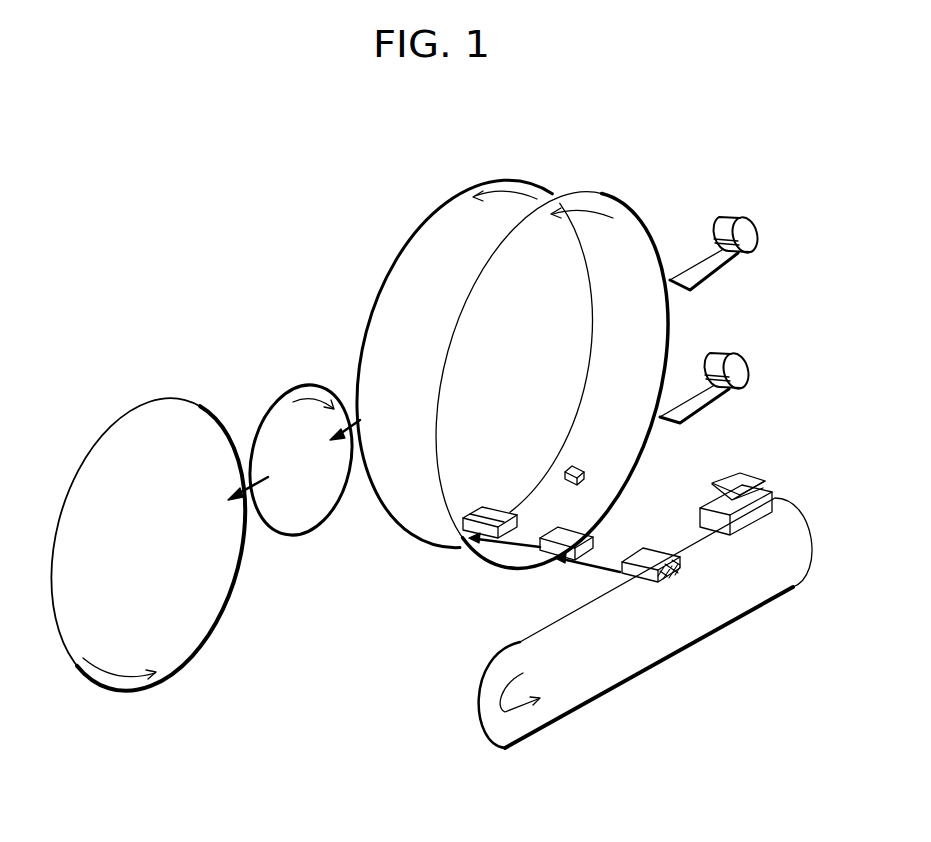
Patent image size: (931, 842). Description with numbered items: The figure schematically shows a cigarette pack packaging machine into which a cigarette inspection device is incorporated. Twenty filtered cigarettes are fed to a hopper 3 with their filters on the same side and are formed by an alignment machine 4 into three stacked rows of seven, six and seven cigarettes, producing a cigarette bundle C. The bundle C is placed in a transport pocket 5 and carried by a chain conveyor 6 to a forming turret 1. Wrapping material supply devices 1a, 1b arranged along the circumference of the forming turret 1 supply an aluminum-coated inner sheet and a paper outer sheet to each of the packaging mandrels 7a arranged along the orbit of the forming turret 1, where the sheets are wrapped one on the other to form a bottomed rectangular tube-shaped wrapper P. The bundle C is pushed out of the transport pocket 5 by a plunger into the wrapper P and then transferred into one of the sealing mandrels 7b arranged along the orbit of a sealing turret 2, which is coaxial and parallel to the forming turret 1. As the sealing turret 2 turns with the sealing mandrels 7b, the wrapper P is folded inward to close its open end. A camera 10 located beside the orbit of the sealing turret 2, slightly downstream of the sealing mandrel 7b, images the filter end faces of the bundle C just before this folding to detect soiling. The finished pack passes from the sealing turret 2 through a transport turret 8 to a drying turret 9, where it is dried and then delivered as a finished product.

The forming turret 1 is at (600, 192).
The wrapping material supply device 1a is at (730, 353).
The wrapping material supply device 1b is at (740, 217).
The sealing turret 2 is at (524, 178).
The hopper 3 is at (735, 476).
The alignment machine 4 is at (777, 496).
The transport pocket 5 is at (652, 553).
The chain conveyor 6 is at (678, 648).
The packaging mandrel 7a is at (558, 528).
The sealing mandrel 7b is at (490, 512).
The transport turret 8 is at (278, 402).
The drying turret 9 is at (135, 403).
The camera 10 is at (570, 472).
The wrapper P is at (551, 556).
The cigarette bundle C is at (677, 574).